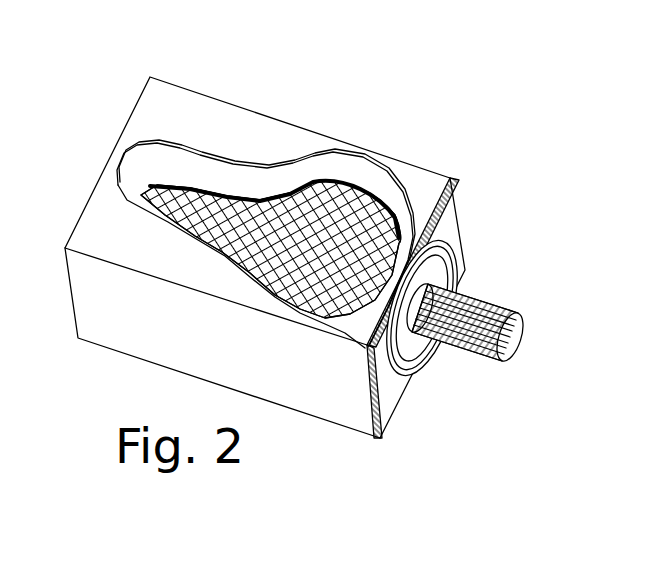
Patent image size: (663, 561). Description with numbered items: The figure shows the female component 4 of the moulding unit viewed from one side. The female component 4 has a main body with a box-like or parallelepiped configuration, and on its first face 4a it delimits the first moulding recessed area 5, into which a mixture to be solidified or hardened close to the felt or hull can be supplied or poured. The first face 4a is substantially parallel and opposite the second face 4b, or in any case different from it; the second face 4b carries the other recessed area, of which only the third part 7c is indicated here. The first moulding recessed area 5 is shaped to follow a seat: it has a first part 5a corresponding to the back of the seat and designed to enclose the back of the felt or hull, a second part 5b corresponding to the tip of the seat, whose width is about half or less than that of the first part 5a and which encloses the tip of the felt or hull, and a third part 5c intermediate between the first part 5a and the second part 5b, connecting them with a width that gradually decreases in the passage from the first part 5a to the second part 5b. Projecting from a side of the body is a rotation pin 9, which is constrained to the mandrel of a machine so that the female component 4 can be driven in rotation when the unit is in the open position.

The female component 4 is at (413, 180).
The first face 4a is at (181, 112).
The second face 4b is at (523, 545).
The first moulding recessed area 5 is at (291, 190).
The first part 5a is at (350, 155).
The second part 5b is at (145, 190).
The third part 5c is at (278, 240).
The third part 7c is at (641, 560).
The rotation pin 9 is at (497, 307).